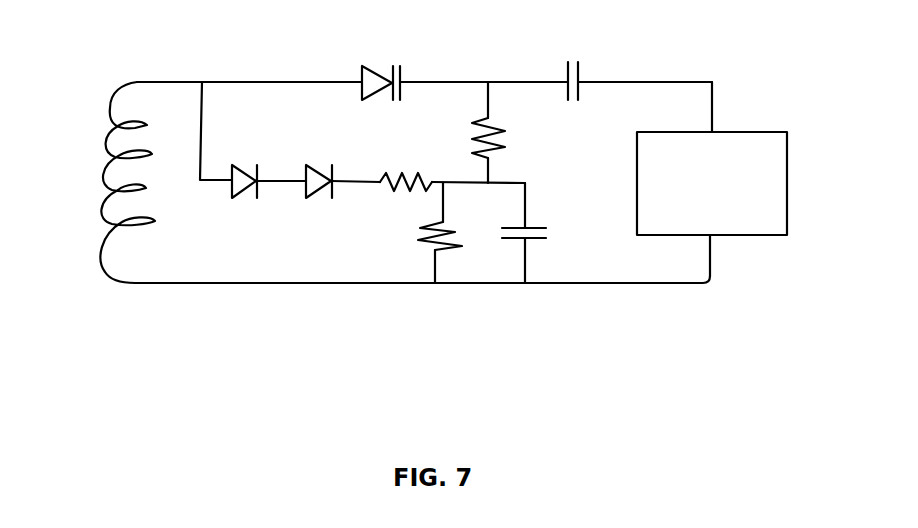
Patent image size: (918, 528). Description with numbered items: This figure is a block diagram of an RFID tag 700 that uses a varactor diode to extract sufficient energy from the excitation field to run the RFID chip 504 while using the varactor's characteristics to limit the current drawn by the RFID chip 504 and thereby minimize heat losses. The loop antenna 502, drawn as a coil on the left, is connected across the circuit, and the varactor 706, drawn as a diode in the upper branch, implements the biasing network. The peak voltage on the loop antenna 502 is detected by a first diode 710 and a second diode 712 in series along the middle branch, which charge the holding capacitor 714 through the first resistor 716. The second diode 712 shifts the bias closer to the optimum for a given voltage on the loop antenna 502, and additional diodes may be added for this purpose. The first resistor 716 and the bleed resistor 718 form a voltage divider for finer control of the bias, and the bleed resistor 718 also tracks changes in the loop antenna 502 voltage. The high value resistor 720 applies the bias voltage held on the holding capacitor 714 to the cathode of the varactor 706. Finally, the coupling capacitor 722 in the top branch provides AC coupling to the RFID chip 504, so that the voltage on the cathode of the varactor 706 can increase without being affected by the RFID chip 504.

The RFID tag 700 is at (672, 366).
The antenna 502 is at (106, 204).
The RFID chip 504 is at (790, 182).
The varactor 706 is at (385, 62).
The diode D2 710 is at (245, 165).
The diode D3 712 is at (318, 165).
The capacitor C1 714 is at (532, 222).
The resistor R3 716 is at (410, 172).
The resistor R2 718 is at (425, 242).
The resistor R1 720 is at (503, 143).
The capacitor 722 is at (583, 68).